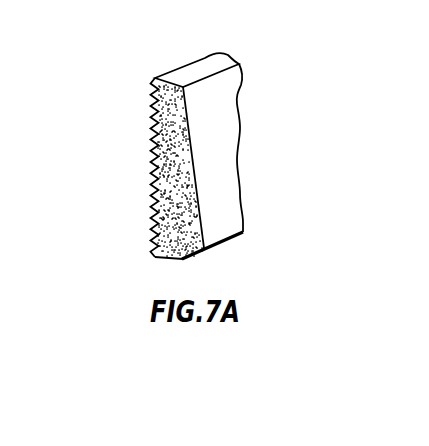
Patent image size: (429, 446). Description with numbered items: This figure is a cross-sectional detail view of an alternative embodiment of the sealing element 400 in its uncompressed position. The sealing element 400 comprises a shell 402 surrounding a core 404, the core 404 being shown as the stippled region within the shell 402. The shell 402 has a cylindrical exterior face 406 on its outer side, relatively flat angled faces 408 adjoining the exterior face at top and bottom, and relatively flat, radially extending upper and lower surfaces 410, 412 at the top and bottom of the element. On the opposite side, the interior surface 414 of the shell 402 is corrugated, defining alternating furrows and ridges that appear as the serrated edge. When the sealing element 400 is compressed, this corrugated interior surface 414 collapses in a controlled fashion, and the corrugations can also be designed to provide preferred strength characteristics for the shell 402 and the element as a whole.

The sealing element 400 is at (195, 145).
The shell 402 is at (220, 160).
The core 404 is at (193, 183).
The cylindrical exterior face 406 is at (228, 207).
The angled faces 408 is at (218, 99).
The upper surface 410 is at (212, 62).
The lower surface 412 is at (163, 259).
The interior surface 414 is at (147, 142).